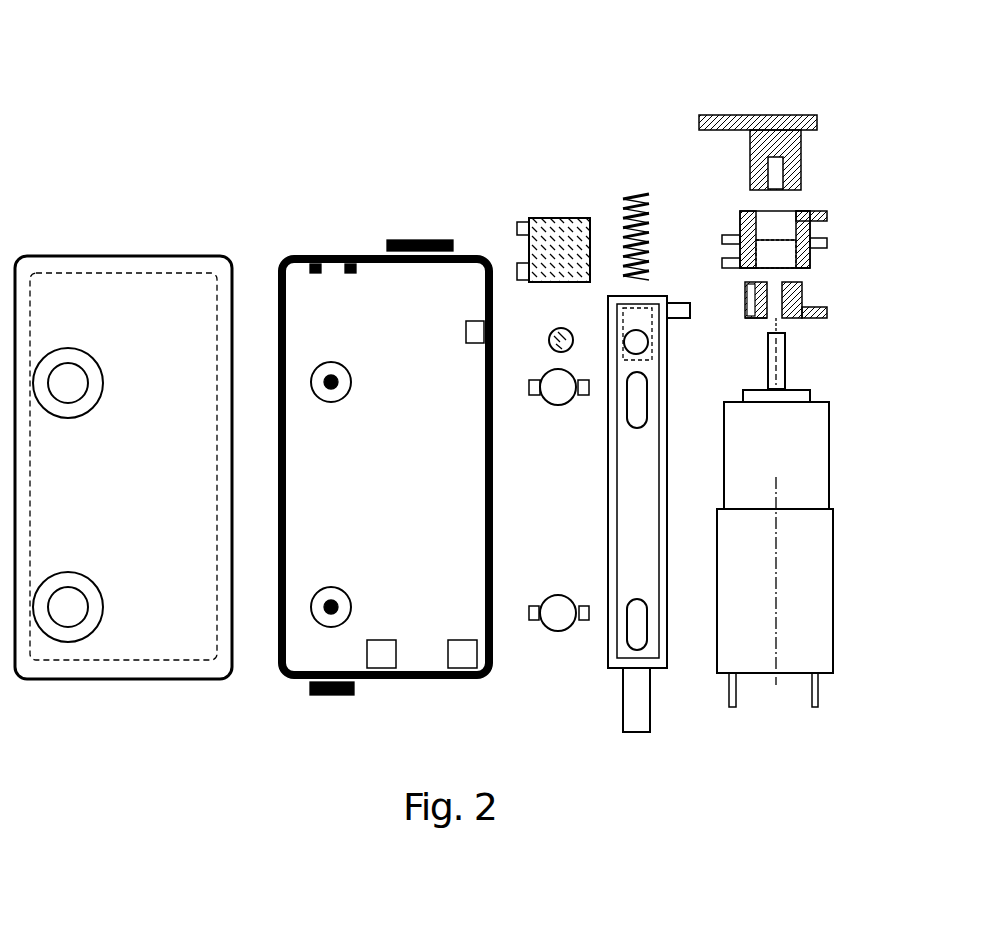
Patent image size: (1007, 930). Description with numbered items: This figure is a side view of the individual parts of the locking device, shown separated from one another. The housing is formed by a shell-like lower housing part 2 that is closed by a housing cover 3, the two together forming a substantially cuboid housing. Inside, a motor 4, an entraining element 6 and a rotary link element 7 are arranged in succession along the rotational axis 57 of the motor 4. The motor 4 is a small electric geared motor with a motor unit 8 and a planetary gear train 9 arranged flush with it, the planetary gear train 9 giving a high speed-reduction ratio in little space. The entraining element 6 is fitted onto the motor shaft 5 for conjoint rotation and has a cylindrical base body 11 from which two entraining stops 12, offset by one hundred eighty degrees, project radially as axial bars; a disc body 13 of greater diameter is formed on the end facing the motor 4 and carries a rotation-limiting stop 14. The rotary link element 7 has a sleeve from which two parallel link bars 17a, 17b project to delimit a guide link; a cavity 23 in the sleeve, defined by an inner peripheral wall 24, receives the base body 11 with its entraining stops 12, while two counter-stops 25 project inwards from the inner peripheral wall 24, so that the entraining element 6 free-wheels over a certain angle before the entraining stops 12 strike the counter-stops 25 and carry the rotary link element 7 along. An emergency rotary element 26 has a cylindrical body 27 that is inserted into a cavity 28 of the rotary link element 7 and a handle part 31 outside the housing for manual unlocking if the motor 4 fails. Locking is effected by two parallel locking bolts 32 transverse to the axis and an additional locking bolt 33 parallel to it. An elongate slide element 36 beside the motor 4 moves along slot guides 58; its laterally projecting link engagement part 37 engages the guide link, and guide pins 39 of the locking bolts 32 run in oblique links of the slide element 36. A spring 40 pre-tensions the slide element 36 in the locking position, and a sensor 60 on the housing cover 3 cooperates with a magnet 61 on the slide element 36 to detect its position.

The lower housing part 2 is at (380, 310).
The housing cover 3 is at (110, 292).
The motor 4 is at (845, 512).
The motor shaft 5 is at (783, 369).
The entraining element 6 is at (837, 279).
The rotary link element 7 is at (824, 175).
The motor unit 8 is at (810, 596).
The planetary gear train 9 is at (795, 453).
The cylindrical base body 11 is at (803, 291).
The entraining stops 12 is at (745, 298).
The disc body 13 is at (745, 318).
The rotation-limiting stop 14 is at (827, 311).
The link bar 17a is at (828, 217).
The link bar 17b is at (827, 244).
The cavity 23 is at (826, 256).
The inner peripheral wall 24 is at (748, 268).
The counter-stops 25 is at (722, 248).
The emergency rotary element 26 is at (792, 118).
The cylindrical body 27 is at (793, 168).
The cavity 28 is at (796, 235).
The handle part 31 is at (722, 116).
The locking bolts 32 is at (560, 406).
The additional locking bolt 33 is at (633, 707).
The slide element 36 is at (626, 533).
The link engagement part 37 is at (679, 320).
The guide pins 39 is at (532, 397).
The spring 40 is at (625, 195).
The rotational axis 57 is at (785, 329).
The slot guides 58 is at (641, 405).
The sensor 60 is at (552, 228).
The magnet 61 is at (549, 336).